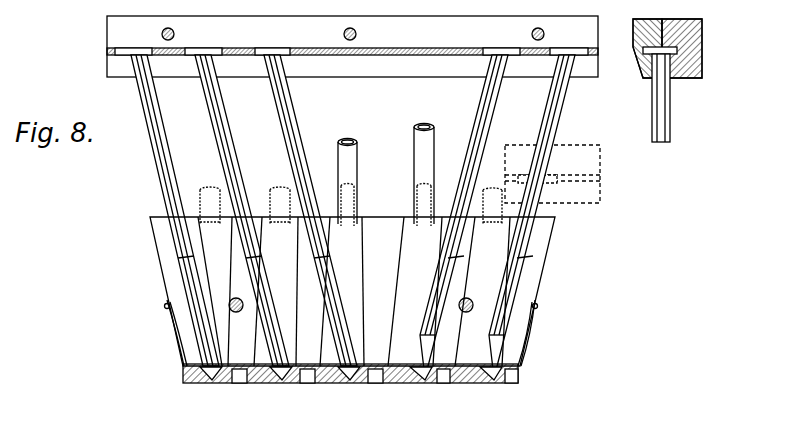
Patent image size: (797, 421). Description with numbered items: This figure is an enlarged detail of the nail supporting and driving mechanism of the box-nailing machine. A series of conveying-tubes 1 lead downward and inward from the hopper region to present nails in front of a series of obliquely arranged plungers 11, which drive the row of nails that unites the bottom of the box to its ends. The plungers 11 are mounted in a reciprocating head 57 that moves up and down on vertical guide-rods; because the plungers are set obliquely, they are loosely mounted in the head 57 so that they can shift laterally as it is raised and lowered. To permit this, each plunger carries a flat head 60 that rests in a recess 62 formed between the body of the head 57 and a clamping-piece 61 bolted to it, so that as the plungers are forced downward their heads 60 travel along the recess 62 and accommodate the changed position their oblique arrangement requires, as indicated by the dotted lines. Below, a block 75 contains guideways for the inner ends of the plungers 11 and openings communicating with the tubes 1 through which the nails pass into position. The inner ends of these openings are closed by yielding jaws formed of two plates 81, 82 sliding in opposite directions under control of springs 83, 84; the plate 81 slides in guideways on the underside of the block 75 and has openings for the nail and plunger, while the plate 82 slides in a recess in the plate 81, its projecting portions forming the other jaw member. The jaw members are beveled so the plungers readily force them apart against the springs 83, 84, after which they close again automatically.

The conveying-tubes 1 is at (200, 197).
The plungers 11 is at (165, 158).
The reciprocating head 57 is at (711, 36).
The flat head 60 is at (136, 51).
The clamping-piece 61 is at (640, 30).
The recess 62 is at (455, 52).
The block 75 is at (352, 291).
The plate 81 is at (204, 383).
The plate 82 is at (366, 383).
The spring 83 is at (175, 348).
The spring 84 is at (530, 350).